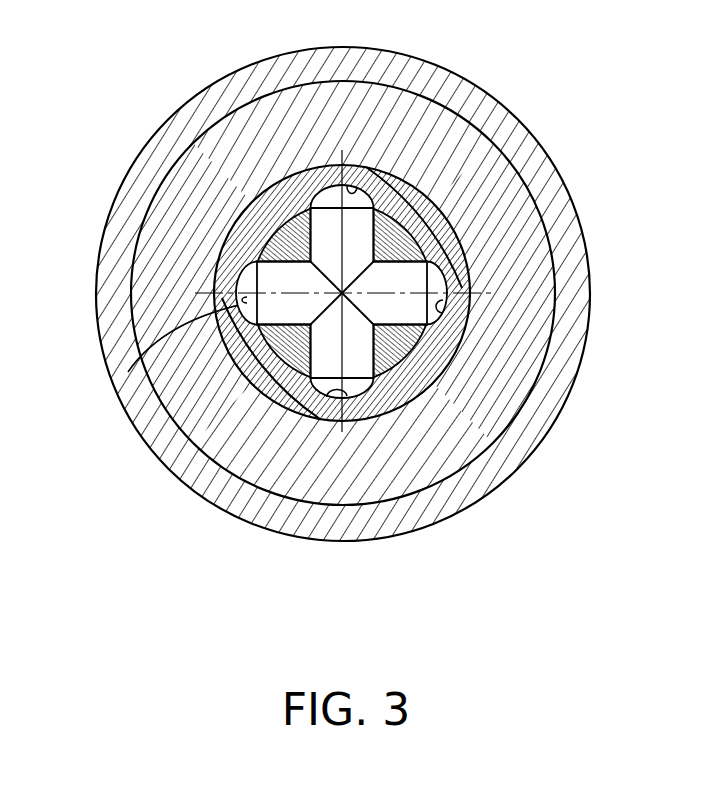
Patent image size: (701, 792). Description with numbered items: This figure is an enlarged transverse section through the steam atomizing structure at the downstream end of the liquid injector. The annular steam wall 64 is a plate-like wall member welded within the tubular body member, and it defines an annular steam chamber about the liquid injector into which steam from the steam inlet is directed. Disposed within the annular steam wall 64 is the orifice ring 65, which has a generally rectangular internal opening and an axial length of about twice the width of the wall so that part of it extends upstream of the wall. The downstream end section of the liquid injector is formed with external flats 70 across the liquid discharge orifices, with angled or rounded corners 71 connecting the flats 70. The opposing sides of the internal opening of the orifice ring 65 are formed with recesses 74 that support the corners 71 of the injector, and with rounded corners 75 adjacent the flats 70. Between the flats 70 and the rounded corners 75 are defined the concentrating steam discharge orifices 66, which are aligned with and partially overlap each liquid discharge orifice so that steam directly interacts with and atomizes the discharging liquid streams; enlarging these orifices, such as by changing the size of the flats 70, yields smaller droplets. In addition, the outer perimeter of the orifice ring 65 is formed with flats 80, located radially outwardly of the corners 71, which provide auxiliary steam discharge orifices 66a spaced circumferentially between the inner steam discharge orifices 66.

The annular steam wall 64 is at (327, 108).
The orifice ring 65 is at (430, 232).
The concentrating steam discharge orifices 66 is at (247, 293).
The auxiliary steam discharge orifices 66a is at (270, 207).
The external flats 70 is at (127, 393).
The angled or rounded corners 71 is at (205, 497).
The recesses 74 is at (268, 245).
The rounded corners 75 is at (358, 178).
The flats 80 is at (430, 232).